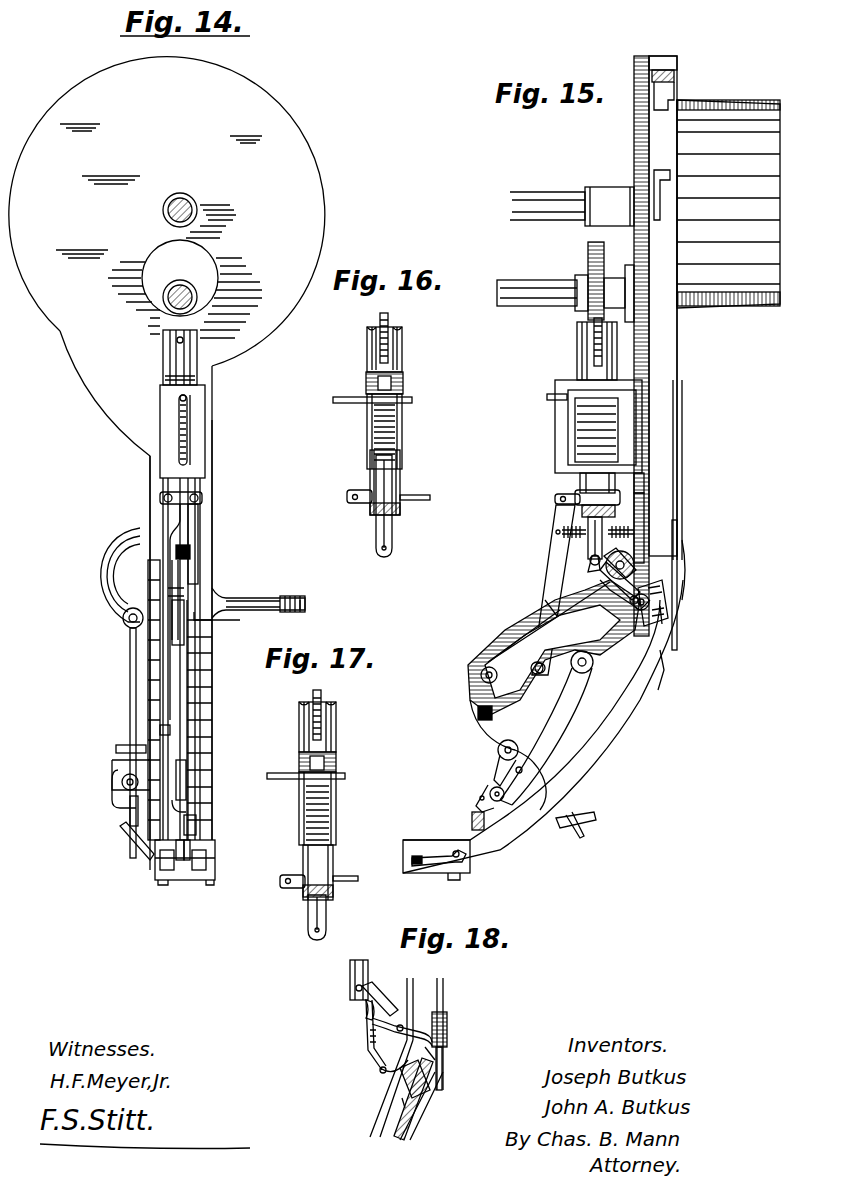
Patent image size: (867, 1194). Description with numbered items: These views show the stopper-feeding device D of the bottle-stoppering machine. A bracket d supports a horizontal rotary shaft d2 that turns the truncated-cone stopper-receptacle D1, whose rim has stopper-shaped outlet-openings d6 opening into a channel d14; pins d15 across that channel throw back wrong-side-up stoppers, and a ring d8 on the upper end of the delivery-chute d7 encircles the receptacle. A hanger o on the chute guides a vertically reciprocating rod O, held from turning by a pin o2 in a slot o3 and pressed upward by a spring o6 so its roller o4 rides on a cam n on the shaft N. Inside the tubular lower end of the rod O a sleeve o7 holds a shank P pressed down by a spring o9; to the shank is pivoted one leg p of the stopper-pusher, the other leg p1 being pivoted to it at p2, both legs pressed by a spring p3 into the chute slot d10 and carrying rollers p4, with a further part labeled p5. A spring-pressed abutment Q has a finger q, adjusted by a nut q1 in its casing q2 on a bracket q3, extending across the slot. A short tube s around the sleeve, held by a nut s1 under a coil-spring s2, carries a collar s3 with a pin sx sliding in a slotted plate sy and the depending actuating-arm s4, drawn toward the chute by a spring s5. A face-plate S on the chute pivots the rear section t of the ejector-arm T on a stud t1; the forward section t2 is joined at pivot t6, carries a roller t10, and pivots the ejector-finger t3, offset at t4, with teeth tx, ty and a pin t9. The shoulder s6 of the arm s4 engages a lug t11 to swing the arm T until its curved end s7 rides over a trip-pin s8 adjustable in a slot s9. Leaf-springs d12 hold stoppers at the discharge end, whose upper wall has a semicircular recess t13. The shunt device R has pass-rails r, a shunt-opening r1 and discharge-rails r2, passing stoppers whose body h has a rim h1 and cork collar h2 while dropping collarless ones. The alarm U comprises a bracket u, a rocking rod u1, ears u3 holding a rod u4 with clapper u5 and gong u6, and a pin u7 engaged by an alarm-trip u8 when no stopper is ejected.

In FIG. 14, the bracket d is at (167, 448).
In FIG. 15, the bracket d is at (634, 127).
In FIG. 14, the horizontal rotary shaft d2 is at (163, 210).
In FIG. 15, the horizontal rotary shaft d2 is at (568, 192).
In FIG. 14, the cam n is at (214, 268).
In FIG. 15, the cam n is at (588, 258).
In FIG. 14, the horizontal shaft N is at (196, 294).
In FIG. 15, the horizontal shaft N is at (540, 280).
In FIG. 14, the roller o4 is at (150, 338).
In FIG. 16, the roller o4 is at (390, 320).
In FIG. 17, the roller o4 is at (323, 696).
In FIG. 15, the roller o4 is at (594, 324).
In FIG. 14, the rod O is at (205, 372).
In FIG. 16, the rod O is at (402, 358).
In FIG. 17, the rod O is at (336, 736).
In FIG. 15, the rod O is at (577, 352).
In FIG. 14, the pin o2 is at (186, 398).
In FIG. 16, the pin o2 is at (412, 400).
In FIG. 15, the pin o2 is at (547, 397).
In FIG. 14, the slot o3 is at (187, 430).
In FIG. 14, the spring o6 is at (190, 442).
In FIG. 15, the spring o6 is at (575, 448).
In FIG. 14, the stopper-feeding device D is at (114, 619).
In FIG. 15, the stopper-feeding device D is at (712, 466).
In FIG. 14, the short tube s is at (163, 488).
In FIG. 16, the short tube s is at (400, 480).
In FIG. 17, the short tube s is at (303, 858).
In FIG. 15, the short tube s is at (566, 489).
In FIG. 14, the collar s3 is at (202, 498).
In FIG. 16, the collar s3 is at (352, 488).
In FIG. 17, the collar s3 is at (280, 880).
In FIG. 15, the collar s3 is at (580, 482).
In FIG. 14, the actuating-arm s4 is at (168, 528).
In FIG. 15, the actuating-arm s4 is at (547, 600).
In FIG. 14, the delivery-chute d7 is at (212, 522).
In FIG. 15, the delivery-chute d7 is at (678, 500).
In FIG. 18, the delivery-chute d7 is at (404, 1128).
In FIG. 14, the shank P is at (198, 537).
In FIG. 16, the shank P is at (392, 538).
In FIG. 17, the shank P is at (326, 918).
In FIG. 15, the shank P is at (588, 545).
In FIG. 18, the shank P is at (350, 975).
In FIG. 14, the spring p3 is at (192, 560).
In FIG. 15, the spring p3 is at (596, 566).
In FIG. 18, the spring p3 is at (366, 1010).
In FIG. 14, the leg p1 is at (184, 582).
In FIG. 15, the leg p1 is at (608, 596).
In FIG. 18, the leg p1 is at (366, 1030).
In FIG. 14, the roller p4 is at (190, 600).
In FIG. 15, the roller p4 is at (634, 596).
In FIG. 18, the roller p4 is at (380, 1072).
In FIG. 14, the spring-pressed abutment Q is at (258, 614).
In FIG. 15, the spring-pressed abutment Q is at (662, 600).
In FIG. 14, the nut q1 is at (280, 598).
In FIG. 14, the finger q is at (200, 614).
In FIG. 14, the casing q2 is at (296, 612).
In FIG. 14, the gong u6 is at (100, 590).
In FIG. 15, the gong u6 is at (684, 572).
In FIG. 14, the clapper u5 is at (130, 642).
In FIG. 14, the face-plate S is at (148, 700).
In FIG. 15, the face-plate S is at (505, 635).
In FIG. 14, the forward section of ejector-arm t2 is at (160, 732).
In FIG. 15, the forward section of ejector-arm t2 is at (548, 742).
In FIG. 14, the rod u4 is at (116, 748).
In FIG. 14, the longitudinal slot d10 is at (190, 760).
In FIG. 14, the ejector-finger t3 is at (182, 790).
In FIG. 15, the ejector-finger t3 is at (484, 822).
In FIG. 14, the alarm mechanism U is at (115, 775).
In FIG. 14, the ears u3 is at (116, 774).
In FIG. 14, the pin u7 is at (128, 798).
In FIG. 15, the pin u7 is at (578, 838).
In FIG. 14, the offset t4 is at (186, 810).
In FIG. 14, the semicircular recess t13 is at (196, 840).
In FIG. 14, the rocking rod u1 is at (124, 826).
In FIG. 15, the rocking rod u1 is at (594, 818).
In FIG. 14, the bracket u is at (152, 856).
In FIG. 14, the leaf-springs d12 is at (160, 870).
In FIG. 15, the leaf-springs d12 is at (430, 856).
In FIG. 14, the upper tooth tx is at (180, 860).
In FIG. 14, the lower tooth ty is at (187, 860).
In FIG. 16, the sleeve o7 is at (403, 386).
In FIG. 17, the sleeve o7 is at (336, 764).
In FIG. 16, the spring o9 is at (402, 420).
In FIG. 16, the nut s1 is at (400, 510).
In FIG. 17, the nut s1 is at (303, 892).
In FIG. 15, the nut s1 is at (615, 512).
In FIG. 17, the coil-spring s2 is at (336, 806).
In FIG. 15, the ring d8 is at (660, 56).
In FIG. 15, the pins d15 is at (674, 76).
In FIG. 15, the channel d14 is at (668, 96).
In FIG. 15, the stopper-receptacle D1 is at (720, 100).
In FIG. 15, the outlet-openings d6 is at (660, 196).
In FIG. 15, the hanger o is at (555, 428).
In FIG. 15, the pin sx is at (640, 490).
In FIG. 15, the slotted plate sy is at (644, 500).
In FIG. 15, the compression-spring s5 is at (562, 532).
In FIG. 15, the pivot p2 is at (630, 556).
In FIG. 15, the leg p is at (634, 570).
In FIG. 18, the leg p is at (384, 1000).
In FIG. 15, the bracket q3 is at (662, 612).
In FIG. 15, the shoulder s6 is at (540, 615).
In FIG. 15, the rear section of ejector-arm t is at (490, 660).
In FIG. 15, the lug t11 is at (543, 668).
In FIG. 15, the pivot t6 is at (593, 664).
In FIG. 15, the stud t1 is at (481, 678).
In FIG. 15, the discharge-rail r2 is at (677, 640).
In FIG. 18, the discharge-rail r2 is at (418, 1094).
In FIG. 15, the shunt device R is at (550, 726).
In FIG. 18, the shunt device R is at (438, 1104).
In FIG. 15, the shunt-opening r1 is at (660, 680).
In FIG. 18, the shunt-opening r1 is at (422, 1080).
In FIG. 15, the slot s9 is at (462, 712).
In FIG. 15, the curved end s7 is at (478, 708).
In FIG. 15, the roller trip-pin s8 is at (498, 752).
In FIG. 15, the ejector-arm T is at (546, 736).
In FIG. 15, the alarm-trip u8 is at (498, 762).
In FIG. 15, the pin t9 is at (490, 794).
In FIG. 15, the roller t10 is at (494, 806).
In FIG. 18, the top rim h1 is at (437, 1012).
In FIG. 18, the metal body of stopper h is at (447, 1030).
In FIG. 18, the pass-rails r is at (440, 1050).
In FIG. 18, the cork sealing-collar h2 is at (434, 1060).
In FIG. 18, the link p5 is at (400, 1025).